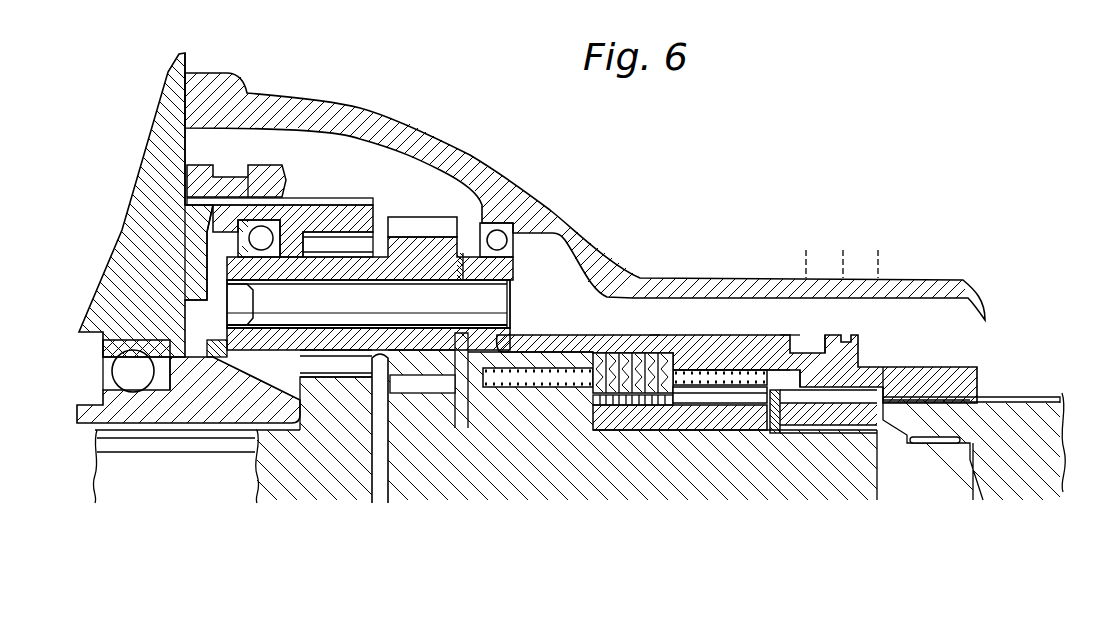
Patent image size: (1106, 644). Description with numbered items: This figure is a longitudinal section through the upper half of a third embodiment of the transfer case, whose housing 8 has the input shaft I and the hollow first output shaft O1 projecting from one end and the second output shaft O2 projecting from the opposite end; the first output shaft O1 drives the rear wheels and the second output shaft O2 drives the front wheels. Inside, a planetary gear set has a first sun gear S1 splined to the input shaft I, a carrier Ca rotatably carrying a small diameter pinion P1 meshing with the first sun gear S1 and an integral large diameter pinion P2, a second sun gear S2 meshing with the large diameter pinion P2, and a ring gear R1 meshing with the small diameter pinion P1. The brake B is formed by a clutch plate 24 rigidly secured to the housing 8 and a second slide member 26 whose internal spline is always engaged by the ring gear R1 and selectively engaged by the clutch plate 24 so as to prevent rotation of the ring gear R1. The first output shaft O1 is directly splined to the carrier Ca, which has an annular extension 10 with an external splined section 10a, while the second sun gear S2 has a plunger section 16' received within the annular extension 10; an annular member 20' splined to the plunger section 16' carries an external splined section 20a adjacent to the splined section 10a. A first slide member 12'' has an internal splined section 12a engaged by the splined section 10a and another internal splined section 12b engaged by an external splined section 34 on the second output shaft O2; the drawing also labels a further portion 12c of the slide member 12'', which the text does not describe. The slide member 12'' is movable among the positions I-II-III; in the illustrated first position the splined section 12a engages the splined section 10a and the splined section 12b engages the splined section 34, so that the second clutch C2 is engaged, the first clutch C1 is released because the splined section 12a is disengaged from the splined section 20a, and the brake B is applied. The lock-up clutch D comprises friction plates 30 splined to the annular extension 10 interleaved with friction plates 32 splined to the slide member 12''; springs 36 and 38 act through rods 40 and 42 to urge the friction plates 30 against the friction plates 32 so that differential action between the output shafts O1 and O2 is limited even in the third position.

The housing 8 is at (150, 185).
The clutch plate 24 is at (193, 245).
The second slide member 26 is at (268, 175).
The brake B is at (234, 172).
The ring gear R1 is at (380, 252).
The small diameter pinion P1 is at (362, 353).
The large diameter pinion P2 is at (443, 366).
The first sun gear S1 is at (345, 431).
The second sun gear S2 is at (440, 431).
The input shaft I is at (148, 476).
The carrier Ca is at (252, 345).
The first output shaft O1 is at (92, 397).
The second output shaft O2 is at (1032, 478).
The rod 42 is at (737, 367).
The lock-up clutch D is at (652, 330).
The internal splined section 12a is at (793, 345).
The first slide member 12'' is at (776, 342).
The drum hub step 12c is at (826, 338).
The internal splined section 12b is at (880, 387).
The first clutch C1 is at (826, 324).
The slide member positions I-II-III is at (844, 251).
The spring 36 is at (540, 380).
The rod 40 is at (585, 370).
The friction plates 32 is at (650, 351).
The external splined section 10a is at (707, 405).
The second clutch C2 is at (727, 412).
The annular extension 10 is at (678, 420).
The spring 38 is at (717, 368).
The friction plates 30 is at (657, 406).
The plunger section 16' is at (774, 463).
The external splined section 20a is at (825, 407).
The annular member 20' is at (960, 469).
The external splined section 34 is at (1015, 397).